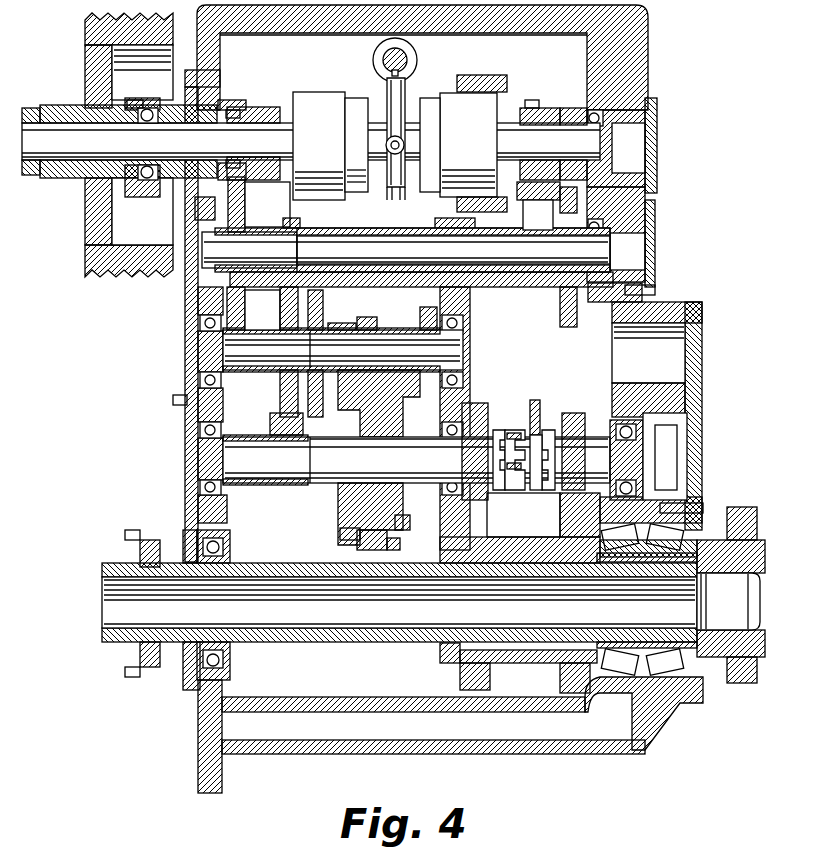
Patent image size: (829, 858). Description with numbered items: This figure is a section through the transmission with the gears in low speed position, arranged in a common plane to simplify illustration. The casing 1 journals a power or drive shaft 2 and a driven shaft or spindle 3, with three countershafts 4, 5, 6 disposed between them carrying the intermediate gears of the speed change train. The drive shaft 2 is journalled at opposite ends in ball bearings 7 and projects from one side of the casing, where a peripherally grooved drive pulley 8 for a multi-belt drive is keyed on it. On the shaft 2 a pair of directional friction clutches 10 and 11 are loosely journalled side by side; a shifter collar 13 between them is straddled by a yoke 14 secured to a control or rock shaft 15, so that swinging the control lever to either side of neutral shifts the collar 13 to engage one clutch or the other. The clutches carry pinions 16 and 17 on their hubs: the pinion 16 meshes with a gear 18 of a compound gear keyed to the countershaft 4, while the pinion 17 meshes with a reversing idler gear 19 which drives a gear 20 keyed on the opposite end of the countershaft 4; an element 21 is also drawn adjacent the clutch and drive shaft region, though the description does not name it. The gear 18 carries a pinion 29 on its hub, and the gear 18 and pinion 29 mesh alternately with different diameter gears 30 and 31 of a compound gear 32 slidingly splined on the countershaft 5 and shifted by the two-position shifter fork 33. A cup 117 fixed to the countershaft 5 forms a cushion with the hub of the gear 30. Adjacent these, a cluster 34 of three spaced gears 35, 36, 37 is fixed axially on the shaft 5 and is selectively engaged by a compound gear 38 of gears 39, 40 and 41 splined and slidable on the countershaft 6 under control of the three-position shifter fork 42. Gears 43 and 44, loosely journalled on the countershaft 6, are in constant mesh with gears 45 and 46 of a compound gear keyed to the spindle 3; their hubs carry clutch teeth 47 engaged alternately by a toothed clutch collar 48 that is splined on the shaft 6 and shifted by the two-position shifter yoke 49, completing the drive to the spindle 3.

The casing 1 is at (652, 68).
The drive shaft 2 is at (268, 120).
The driven shaft or spindle 3 is at (388, 644).
The countershaft 4 is at (380, 242).
The countershaft 5 is at (402, 332).
The countershaft 6 is at (330, 480).
The ball bearings 7 is at (158, 105).
The drive pulley 8 is at (100, 50).
The directional friction clutch 10 is at (315, 106).
The directional friction clutch 11 is at (452, 103).
The shifter collar 13 is at (396, 190).
The yoke 14 is at (386, 95).
The control or rock shaft 15 is at (385, 58).
The pinion 16 is at (236, 108).
The pinion 17 is at (548, 108).
The gear 18 is at (245, 209).
The reversing idler gear 19 is at (530, 210).
The gear 20 is at (560, 308).
The bearing bracket 21 is at (500, 76).
The pinion 29 is at (300, 220).
The gear 30 is at (285, 295).
The gear 31 is at (280, 325).
The compound gear 32 is at (274, 400).
The shifter fork 33 is at (270, 422).
The cluster 34 is at (345, 323).
The gear 35 is at (323, 295).
The gear 36 is at (375, 313).
The gear 37 is at (428, 318).
The compound gear 38 is at (338, 515).
The gear 39 is at (340, 535).
The gear 40 is at (357, 545).
The gear 41 is at (397, 523).
The shifter fork 42 is at (398, 545).
The gear 43 is at (485, 408).
The gear 44 is at (573, 413).
The gear 45 is at (523, 515).
The gear 46 is at (565, 520).
The clutch teeth 47 is at (503, 428).
The toothed clutch collar 48 is at (518, 428).
The shifter yoke 49 is at (536, 400).
The cup 117 is at (320, 265).